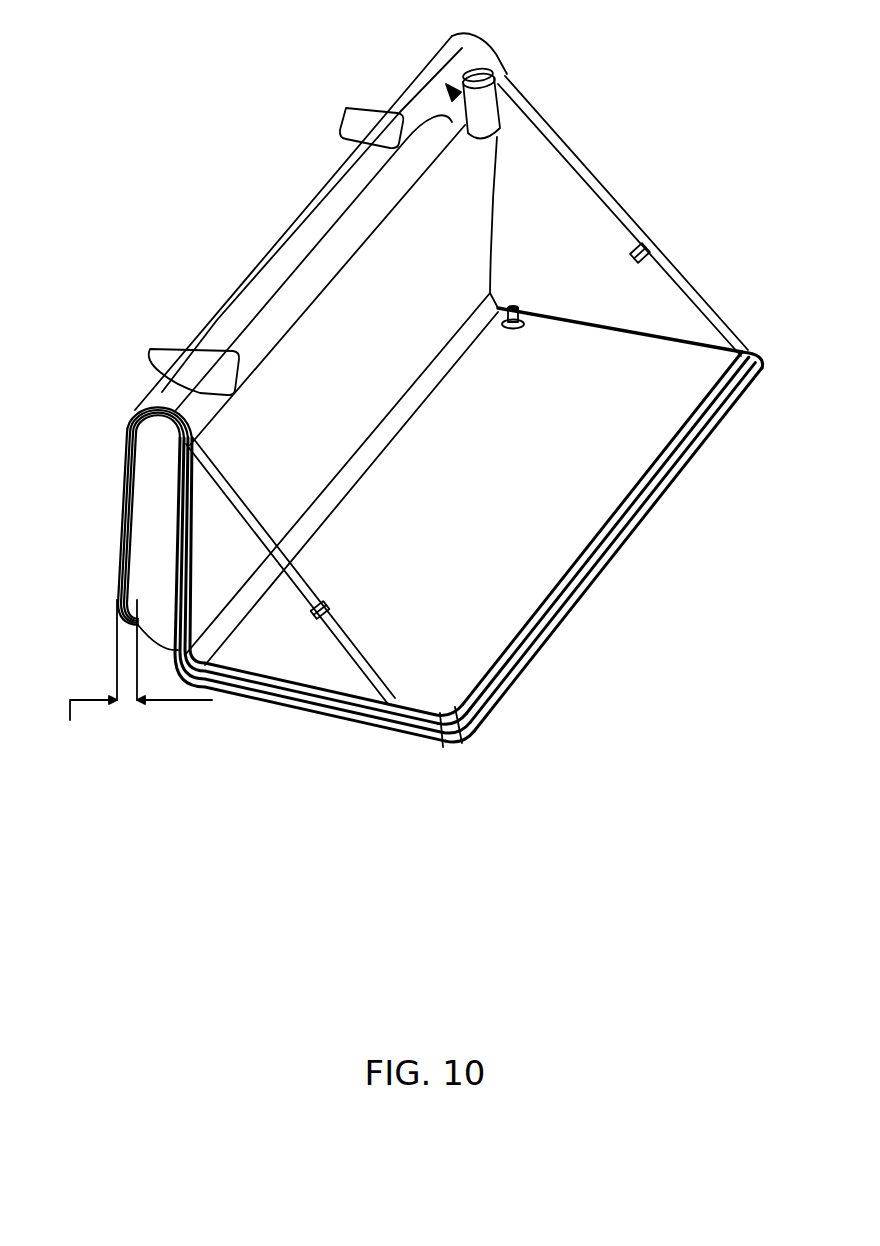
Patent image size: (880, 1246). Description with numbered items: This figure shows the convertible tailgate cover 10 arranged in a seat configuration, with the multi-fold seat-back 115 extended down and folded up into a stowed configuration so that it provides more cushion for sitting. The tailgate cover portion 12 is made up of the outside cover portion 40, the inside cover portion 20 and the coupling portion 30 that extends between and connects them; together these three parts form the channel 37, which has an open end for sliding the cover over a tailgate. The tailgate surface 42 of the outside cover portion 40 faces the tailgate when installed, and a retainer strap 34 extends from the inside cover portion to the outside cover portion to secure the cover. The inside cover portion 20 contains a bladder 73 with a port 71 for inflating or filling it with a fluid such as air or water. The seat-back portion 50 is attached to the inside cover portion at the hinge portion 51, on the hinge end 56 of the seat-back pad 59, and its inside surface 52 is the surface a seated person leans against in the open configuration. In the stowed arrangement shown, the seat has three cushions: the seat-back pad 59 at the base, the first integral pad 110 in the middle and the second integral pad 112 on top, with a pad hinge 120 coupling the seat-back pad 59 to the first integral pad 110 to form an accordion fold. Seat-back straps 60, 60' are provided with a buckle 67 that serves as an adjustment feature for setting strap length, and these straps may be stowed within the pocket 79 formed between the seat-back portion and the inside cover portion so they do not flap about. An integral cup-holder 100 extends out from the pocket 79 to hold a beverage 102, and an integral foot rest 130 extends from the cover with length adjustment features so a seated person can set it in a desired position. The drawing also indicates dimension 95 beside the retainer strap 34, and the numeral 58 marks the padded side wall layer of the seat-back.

The convertible tailgate cover 10 is at (257, 148).
The tailgate cover portion 12 is at (205, 340).
The inside cover portion 20 is at (377, 297).
The coupling portion 30 is at (322, 220).
The retainer strap 34 is at (174, 669).
The channel 37 is at (158, 440).
The outside cover portion 40 is at (127, 493).
The tailgate surface 42 is at (152, 547).
The seat-back portion 50 is at (340, 717).
The hinge portion 51 is at (343, 490).
The inside surface of the seat-back portion 52 is at (288, 683).
The hinge end of the seat-back pad 56 is at (397, 423).
The side wall 58 is at (667, 498).
The seat-back pad 59 is at (507, 680).
The seat-back strap 60 is at (623, 216).
The seat-back strap 60' is at (290, 569).
The buckle 67 is at (637, 253).
The port 71 is at (513, 307).
The bladder 73 is at (703, 372).
The pocket 79 is at (320, 293).
The thickness dimension 95 is at (85, 676).
The integral cup-holder 100 is at (497, 115).
The beverage 102 is at (493, 63).
The first integral pad 110 is at (435, 735).
The second integral pad 112 is at (560, 470).
The multi-fold seat-back 115 is at (437, 527).
The pad hinge 120 is at (590, 587).
The integral foot rest 130 is at (357, 113).